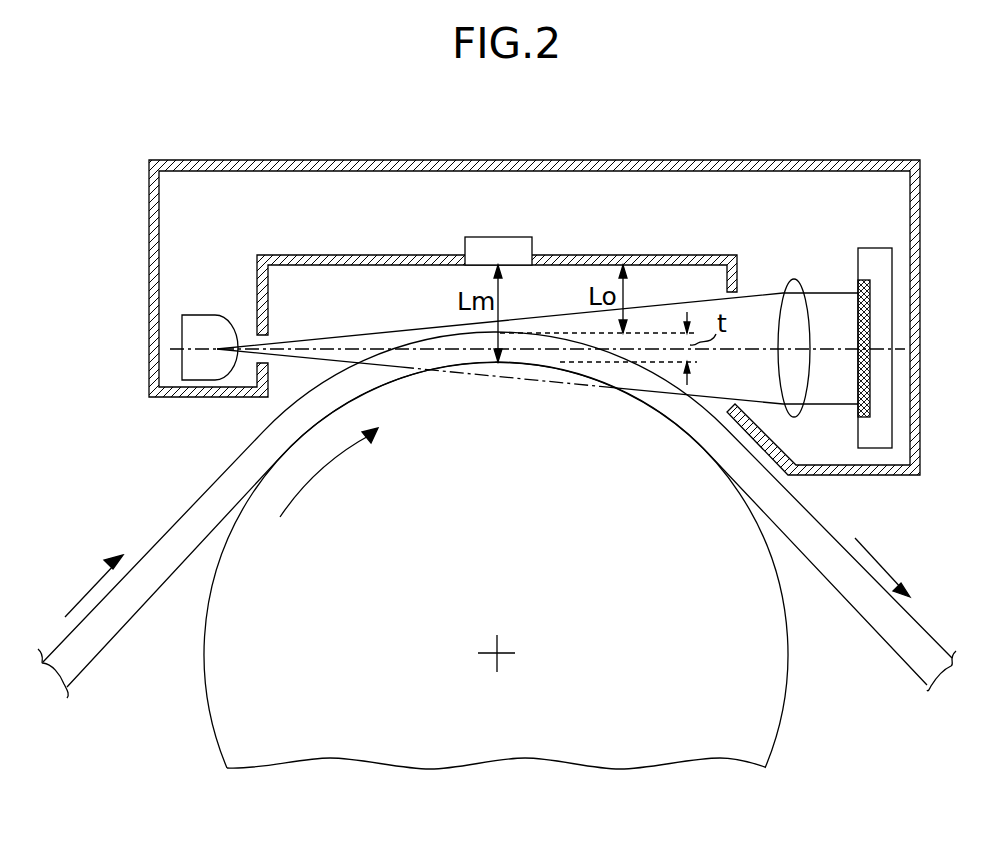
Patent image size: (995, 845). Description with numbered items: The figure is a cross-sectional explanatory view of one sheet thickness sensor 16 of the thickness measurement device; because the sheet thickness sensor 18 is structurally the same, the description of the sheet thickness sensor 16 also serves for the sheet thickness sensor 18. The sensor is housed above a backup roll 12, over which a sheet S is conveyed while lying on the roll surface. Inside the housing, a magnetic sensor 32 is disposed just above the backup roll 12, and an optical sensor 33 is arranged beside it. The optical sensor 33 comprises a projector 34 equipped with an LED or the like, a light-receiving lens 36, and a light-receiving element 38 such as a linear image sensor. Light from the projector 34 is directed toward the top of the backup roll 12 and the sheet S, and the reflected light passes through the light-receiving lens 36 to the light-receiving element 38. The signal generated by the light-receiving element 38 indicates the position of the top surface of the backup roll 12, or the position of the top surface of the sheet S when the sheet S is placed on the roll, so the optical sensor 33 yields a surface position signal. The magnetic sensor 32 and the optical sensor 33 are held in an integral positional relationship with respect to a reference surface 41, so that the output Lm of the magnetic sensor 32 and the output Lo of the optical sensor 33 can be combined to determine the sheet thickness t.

The backup roll 12 is at (513, 527).
The sheet S is at (205, 508).
The sheet thickness sensor 16 is at (534, 273).
The sheet thickness sensor 18 is at (659, 154).
The reference surface 41 is at (390, 272).
The magnetic sensor 32 is at (510, 247).
The projector 34 is at (203, 328).
The light-receiving lens 36 is at (791, 283).
The optical sensor 33 is at (848, 270).
The light-receiving element 38 is at (876, 258).